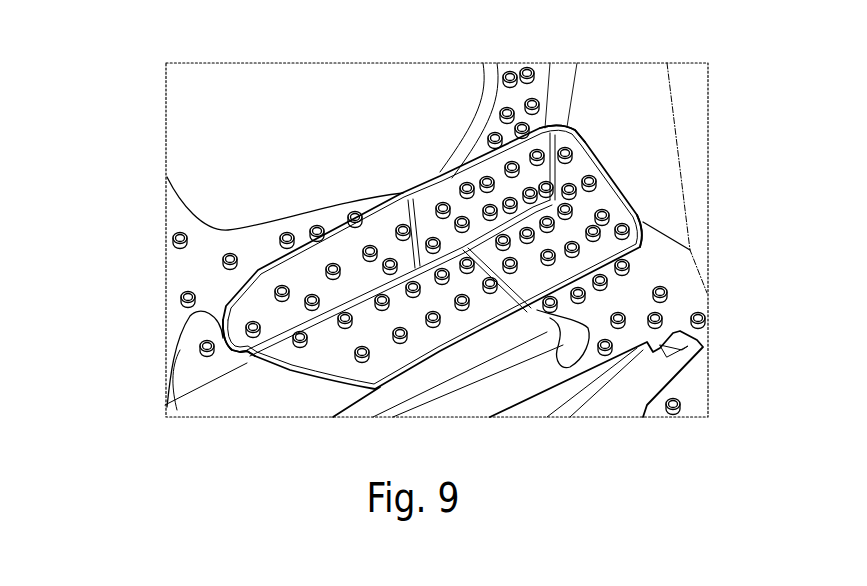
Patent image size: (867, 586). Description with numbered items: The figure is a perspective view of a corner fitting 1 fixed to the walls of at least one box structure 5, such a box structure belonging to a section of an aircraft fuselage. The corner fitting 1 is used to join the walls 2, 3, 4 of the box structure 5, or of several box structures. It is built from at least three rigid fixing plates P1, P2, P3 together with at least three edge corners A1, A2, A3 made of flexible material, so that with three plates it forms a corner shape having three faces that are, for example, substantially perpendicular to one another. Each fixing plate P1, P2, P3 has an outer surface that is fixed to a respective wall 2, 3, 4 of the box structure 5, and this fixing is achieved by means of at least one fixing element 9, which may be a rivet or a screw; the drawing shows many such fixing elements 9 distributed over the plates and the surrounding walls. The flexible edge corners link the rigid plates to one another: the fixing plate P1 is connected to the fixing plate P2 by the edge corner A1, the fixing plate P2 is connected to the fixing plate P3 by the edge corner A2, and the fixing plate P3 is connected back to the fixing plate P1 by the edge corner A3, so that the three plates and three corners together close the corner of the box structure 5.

The corner fitting 1 is at (501, 238).
The wall 2 is at (330, 217).
The wall 3 is at (610, 133).
The wall 4 is at (307, 390).
The box structure 5 is at (158, 247).
The fixing element 9 is at (372, 244).
The fixing plate P1 is at (428, 217).
The fixing plate P2 is at (605, 195).
The fixing plate P3 is at (383, 353).
The edge corner A1 is at (557, 128).
The edge corner A2 is at (640, 248).
The edge corner A3 is at (300, 336).